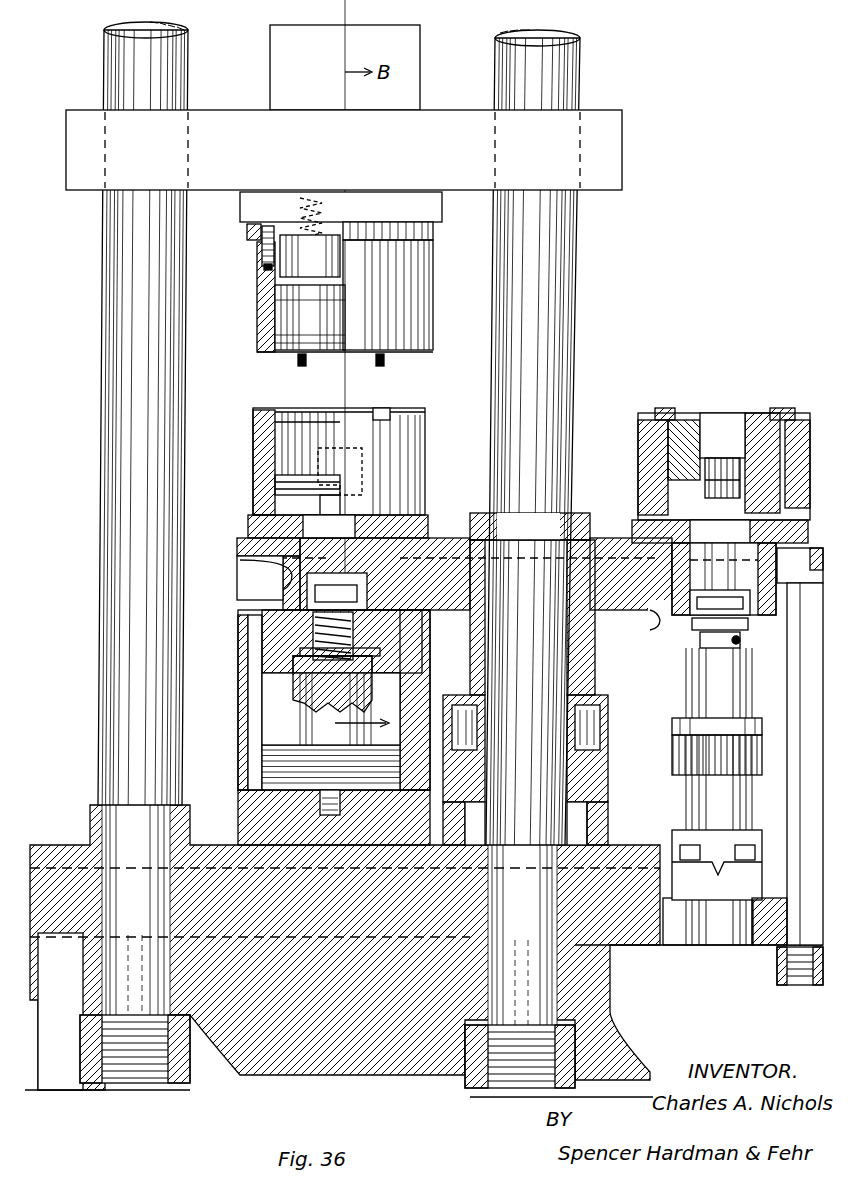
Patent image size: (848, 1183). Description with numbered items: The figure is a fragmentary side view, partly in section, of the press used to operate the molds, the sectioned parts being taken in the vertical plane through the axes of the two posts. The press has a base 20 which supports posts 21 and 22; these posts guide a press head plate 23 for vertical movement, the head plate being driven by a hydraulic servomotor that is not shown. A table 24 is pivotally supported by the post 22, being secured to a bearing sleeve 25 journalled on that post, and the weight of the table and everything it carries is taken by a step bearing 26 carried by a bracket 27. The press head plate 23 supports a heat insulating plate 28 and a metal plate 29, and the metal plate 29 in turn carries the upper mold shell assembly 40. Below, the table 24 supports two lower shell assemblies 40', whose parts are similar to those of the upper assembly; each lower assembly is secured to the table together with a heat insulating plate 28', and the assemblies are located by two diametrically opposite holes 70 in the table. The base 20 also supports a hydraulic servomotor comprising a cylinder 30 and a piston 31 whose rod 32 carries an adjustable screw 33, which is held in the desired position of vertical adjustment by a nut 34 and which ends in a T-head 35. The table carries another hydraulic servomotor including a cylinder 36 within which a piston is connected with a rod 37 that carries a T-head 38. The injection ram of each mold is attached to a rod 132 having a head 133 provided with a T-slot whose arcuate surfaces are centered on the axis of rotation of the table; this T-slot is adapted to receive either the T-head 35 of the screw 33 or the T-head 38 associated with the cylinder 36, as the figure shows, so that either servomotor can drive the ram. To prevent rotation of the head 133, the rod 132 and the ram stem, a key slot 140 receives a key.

The base 20 is at (352, 1076).
The post 21 is at (104, 395).
The post 22 is at (497, 393).
The press head plate 23 is at (622, 150).
The table 24 is at (447, 536).
The bearing sleeve 25 is at (575, 645).
The step bearing 26 is at (585, 752).
The bracket 27 is at (598, 811).
The heat insulating plate 28 is at (318, 226).
The heat insulating plate 28' is at (310, 529).
The metal plate 29 is at (258, 229).
The cylinder 30 is at (240, 762).
The piston 31 is at (270, 735).
The rod 32 is at (294, 690).
The adjustable screw 33 is at (330, 660).
The nut 34 is at (313, 640).
The T-head 35 is at (312, 600).
The cylinder 36 is at (740, 796).
The rod 37 is at (740, 640).
The T-head 38 is at (700, 628).
The upper mold shell assembly 40 is at (315, 295).
The lower shell assembly 40' is at (504, 467).
The hole 70 is at (285, 568).
The rod 132 is at (716, 578).
The head 133 is at (760, 582).
The key slot 140 is at (798, 532).